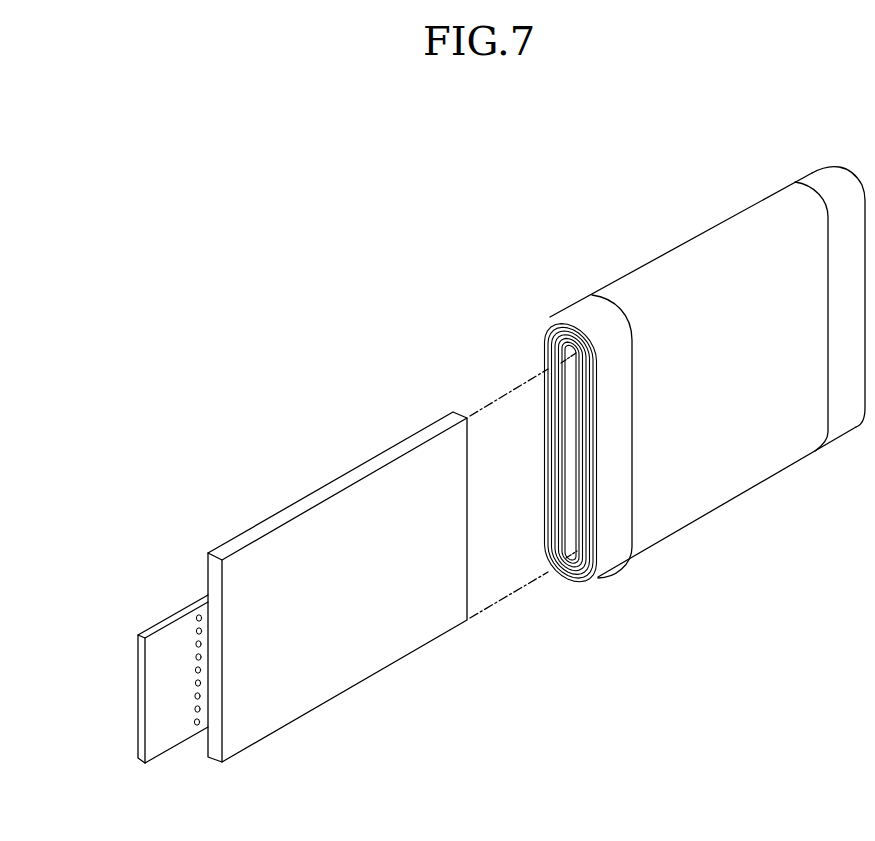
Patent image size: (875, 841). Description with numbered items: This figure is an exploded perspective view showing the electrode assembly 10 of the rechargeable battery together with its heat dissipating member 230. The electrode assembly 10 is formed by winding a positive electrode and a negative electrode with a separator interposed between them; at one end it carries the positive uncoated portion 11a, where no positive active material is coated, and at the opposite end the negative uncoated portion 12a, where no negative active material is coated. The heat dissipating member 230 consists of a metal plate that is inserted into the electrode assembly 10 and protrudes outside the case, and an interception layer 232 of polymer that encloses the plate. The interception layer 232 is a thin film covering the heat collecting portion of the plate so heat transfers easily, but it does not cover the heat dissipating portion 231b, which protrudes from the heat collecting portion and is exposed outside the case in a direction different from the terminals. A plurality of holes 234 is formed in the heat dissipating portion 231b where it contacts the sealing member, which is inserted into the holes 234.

The electrode assembly 10 is at (667, 361).
The positive uncoated portion 11a is at (590, 316).
The negative uncoated portion 12a is at (826, 182).
The heat dissipating member 230 is at (258, 560).
The interception layer 232 is at (260, 553).
The heat dissipating portion 231b is at (152, 668).
The holes 234 is at (195, 624).